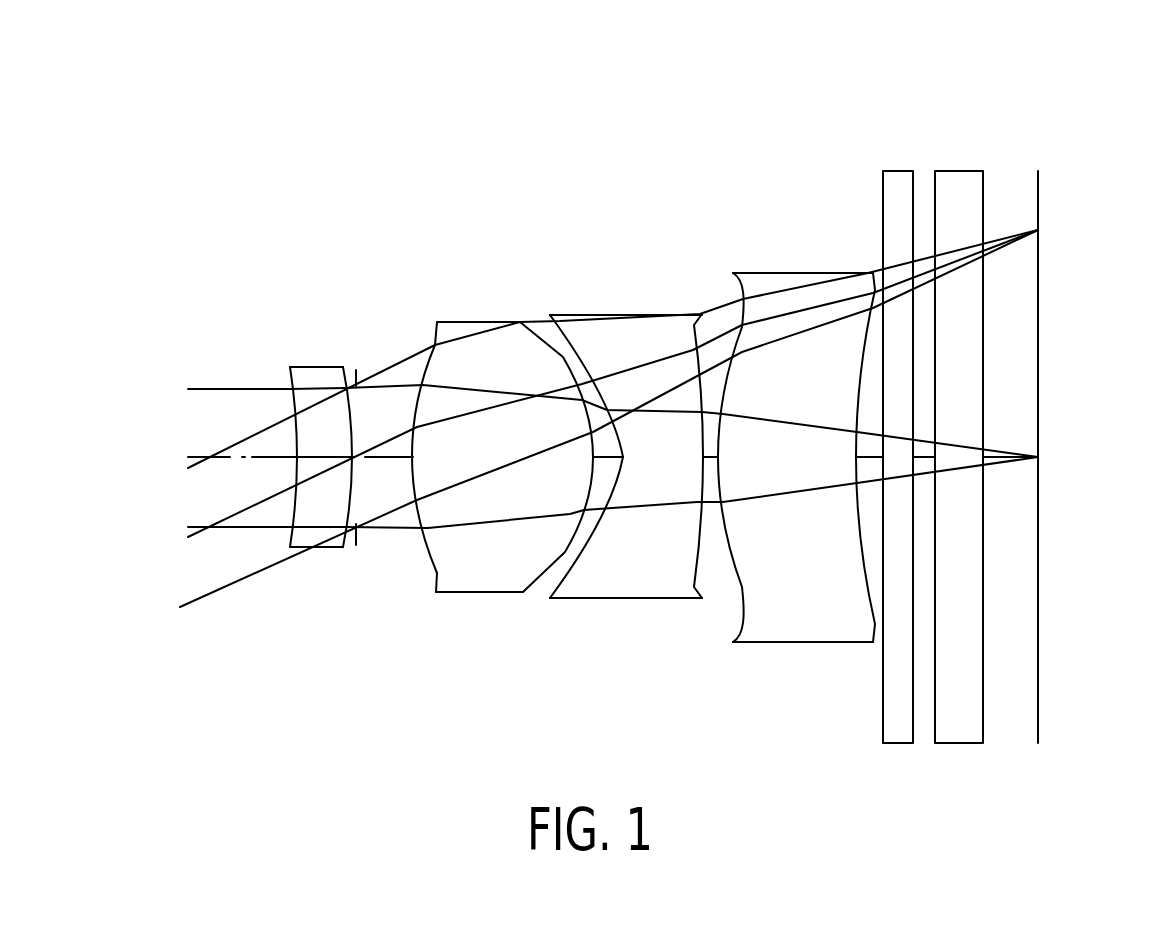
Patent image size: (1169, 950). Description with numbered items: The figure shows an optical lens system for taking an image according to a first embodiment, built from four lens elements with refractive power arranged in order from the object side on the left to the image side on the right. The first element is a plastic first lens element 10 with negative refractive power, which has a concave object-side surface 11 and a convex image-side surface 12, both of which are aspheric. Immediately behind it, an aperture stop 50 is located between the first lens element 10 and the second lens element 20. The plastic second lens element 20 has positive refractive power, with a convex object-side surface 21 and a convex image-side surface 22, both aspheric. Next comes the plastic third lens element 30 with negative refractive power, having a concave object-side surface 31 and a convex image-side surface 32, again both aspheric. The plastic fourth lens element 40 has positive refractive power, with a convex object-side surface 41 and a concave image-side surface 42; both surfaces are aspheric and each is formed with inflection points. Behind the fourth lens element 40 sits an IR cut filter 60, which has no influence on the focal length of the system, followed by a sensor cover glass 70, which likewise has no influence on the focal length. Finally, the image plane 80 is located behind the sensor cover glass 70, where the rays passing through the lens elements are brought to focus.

The first lens element 10 is at (301, 450).
The object-side surface of the first lens element 11 is at (287, 519).
The image-side surface of the first lens element 12 is at (353, 505).
The aperture stop 50 is at (364, 361).
The second lens element 20 is at (498, 468).
The object-side surface of the second lens element 21 is at (426, 555).
The image-side surface of the second lens element 22 is at (539, 591).
The third lens element 30 is at (636, 448).
The object-side surface of the third lens element 31 is at (577, 569).
The image-side surface of the third lens element 32 is at (687, 566).
The fourth lens element 40 is at (799, 424).
The object-side surface of the fourth lens element 41 is at (747, 590).
The image-side surface of the fourth lens element 42 is at (864, 568).
The IR cut filter 60 is at (900, 164).
The sensor cover glass 70 is at (957, 164).
The image plane 80 is at (1048, 191).